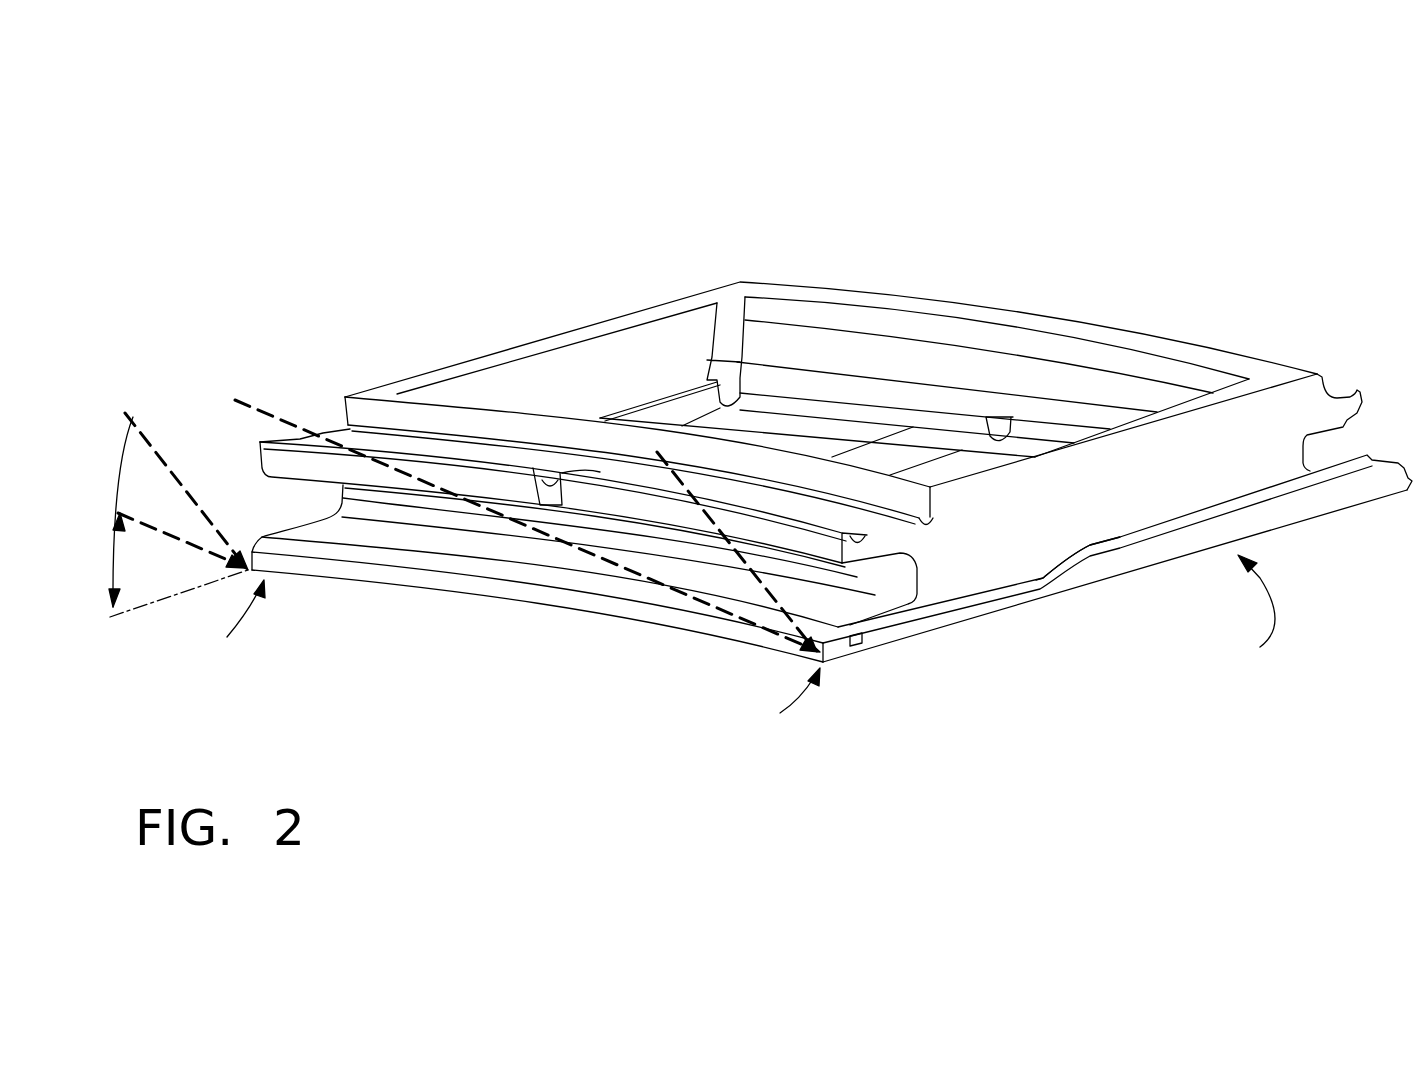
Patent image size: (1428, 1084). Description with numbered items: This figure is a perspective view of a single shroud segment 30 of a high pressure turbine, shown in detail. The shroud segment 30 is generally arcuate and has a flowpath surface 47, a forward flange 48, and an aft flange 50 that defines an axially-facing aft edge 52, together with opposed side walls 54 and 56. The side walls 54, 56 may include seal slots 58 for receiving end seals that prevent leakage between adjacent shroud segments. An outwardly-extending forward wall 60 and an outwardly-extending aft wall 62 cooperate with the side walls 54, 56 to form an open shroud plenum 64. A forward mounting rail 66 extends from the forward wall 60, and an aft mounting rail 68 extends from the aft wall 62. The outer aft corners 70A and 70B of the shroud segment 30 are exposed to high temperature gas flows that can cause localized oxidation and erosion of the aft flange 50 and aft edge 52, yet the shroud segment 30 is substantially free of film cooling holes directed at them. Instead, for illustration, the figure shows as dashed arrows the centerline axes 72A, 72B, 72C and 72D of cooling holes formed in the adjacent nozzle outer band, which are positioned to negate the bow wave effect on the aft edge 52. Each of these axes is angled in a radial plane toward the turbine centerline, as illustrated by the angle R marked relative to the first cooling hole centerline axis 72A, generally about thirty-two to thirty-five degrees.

The shroud segment 30 is at (955, 282).
The flowpath surface 47 is at (1248, 612).
The forward flange 48 is at (1343, 463).
The aft flange 50 is at (865, 645).
The aft edge 52 is at (495, 593).
The side wall 54 is at (573, 367).
The side wall 56 is at (1087, 492).
The seal slot 58 is at (1007, 590).
The forward wall 60 is at (1062, 347).
The aft wall 62 is at (500, 425).
The shroud plenum 64 is at (762, 402).
The forward mounting rail 66 is at (1340, 382).
The aft mounting rail 68 is at (892, 543).
The outer aft corner 70A is at (217, 620).
The outer aft corner 70B is at (762, 707).
The first cooling hole centerline axis 72A is at (137, 513).
The second cooling hole centerline axis 72B is at (133, 417).
The third cooling hole centerline axis 72C is at (615, 570).
The fourth cooling hole centerline axis 72D is at (760, 587).
The radial angle R is at (115, 562).